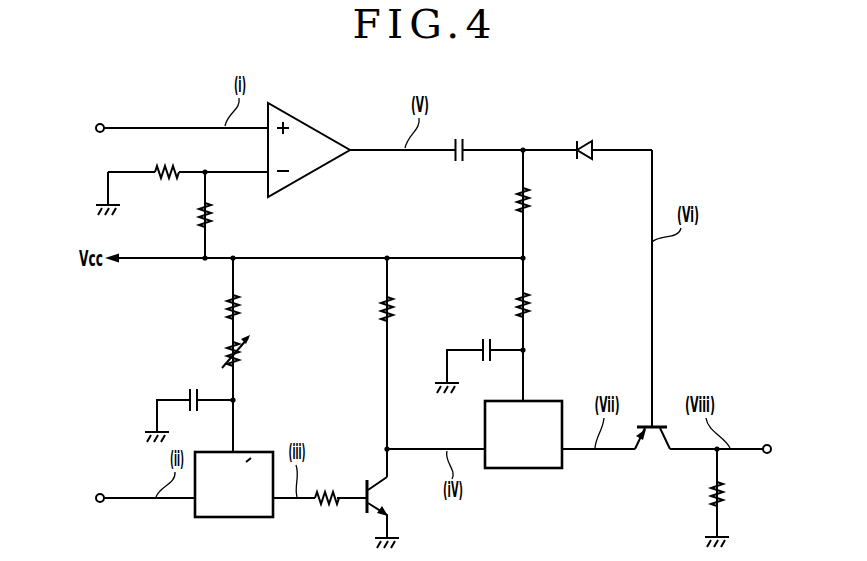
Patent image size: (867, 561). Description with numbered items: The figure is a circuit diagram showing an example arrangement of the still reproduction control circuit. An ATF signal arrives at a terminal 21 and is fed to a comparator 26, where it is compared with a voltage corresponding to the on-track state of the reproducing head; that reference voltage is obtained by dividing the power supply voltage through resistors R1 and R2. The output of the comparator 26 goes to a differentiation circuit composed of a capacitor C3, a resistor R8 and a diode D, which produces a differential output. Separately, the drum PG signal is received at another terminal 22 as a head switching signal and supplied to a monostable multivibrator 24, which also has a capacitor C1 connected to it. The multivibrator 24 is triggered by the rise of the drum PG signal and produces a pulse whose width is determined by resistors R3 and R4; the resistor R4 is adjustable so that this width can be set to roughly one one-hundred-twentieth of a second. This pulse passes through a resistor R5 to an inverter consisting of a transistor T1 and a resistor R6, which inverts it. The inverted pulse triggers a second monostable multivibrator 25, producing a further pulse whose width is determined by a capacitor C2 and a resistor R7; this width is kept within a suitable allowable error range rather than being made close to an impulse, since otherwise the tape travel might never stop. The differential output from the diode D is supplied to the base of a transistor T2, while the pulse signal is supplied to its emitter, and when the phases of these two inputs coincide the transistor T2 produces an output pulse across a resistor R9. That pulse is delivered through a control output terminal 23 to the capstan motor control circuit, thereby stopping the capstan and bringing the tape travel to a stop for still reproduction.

The terminal 21 is at (103, 124).
The terminal 22 is at (103, 493).
The control output terminal 23 is at (765, 444).
The monostable multivibrator 24 is at (213, 518).
The monostable multivibrator 25 is at (511, 469).
The comparator 26 is at (320, 130).
The resistor R1 is at (164, 179).
The resistor R2 is at (215, 217).
The resistor R3 is at (239, 302).
The resistor R4 is at (240, 355).
The resistor R5 is at (330, 492).
The resistor R6 is at (382, 306).
The resistor R7 is at (530, 306).
The resistor R8 is at (530, 193).
The resistor R9 is at (712, 495).
The capacitor C1 is at (194, 389).
The capacitor C2 is at (485, 338).
The capacitor C3 is at (457, 138).
The diode D is at (589, 139).
The transistor T1 is at (382, 498).
The transistor T2 is at (649, 437).